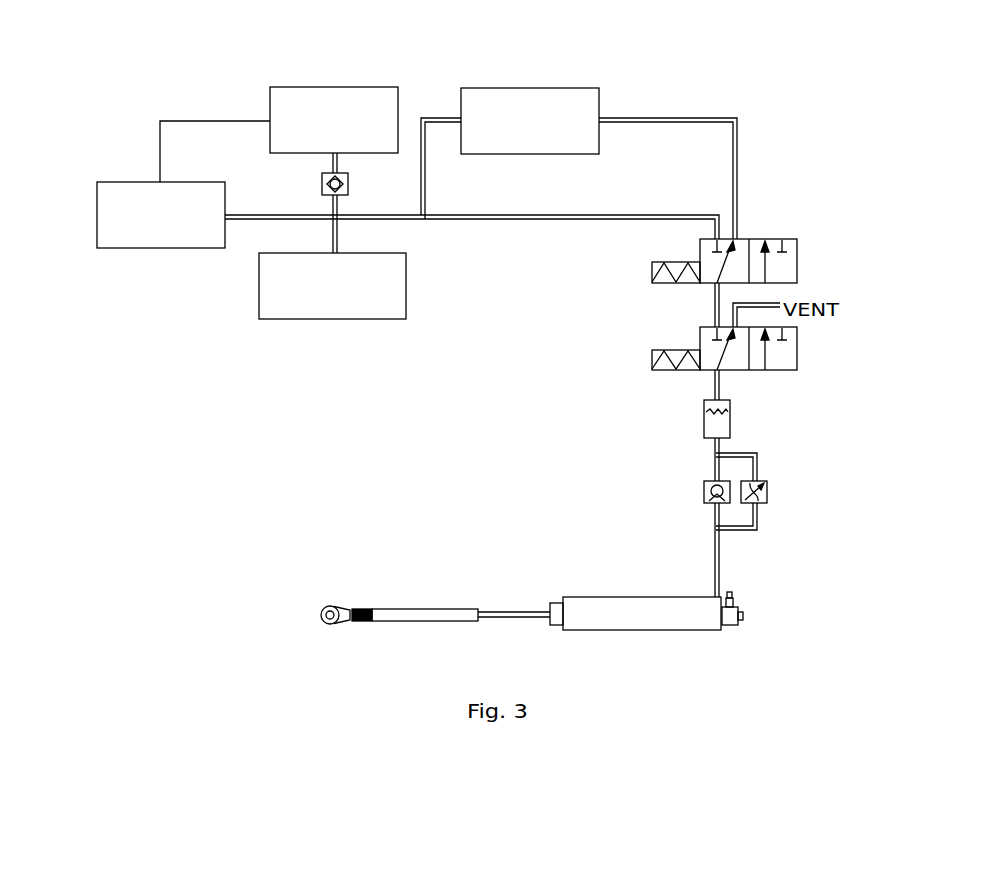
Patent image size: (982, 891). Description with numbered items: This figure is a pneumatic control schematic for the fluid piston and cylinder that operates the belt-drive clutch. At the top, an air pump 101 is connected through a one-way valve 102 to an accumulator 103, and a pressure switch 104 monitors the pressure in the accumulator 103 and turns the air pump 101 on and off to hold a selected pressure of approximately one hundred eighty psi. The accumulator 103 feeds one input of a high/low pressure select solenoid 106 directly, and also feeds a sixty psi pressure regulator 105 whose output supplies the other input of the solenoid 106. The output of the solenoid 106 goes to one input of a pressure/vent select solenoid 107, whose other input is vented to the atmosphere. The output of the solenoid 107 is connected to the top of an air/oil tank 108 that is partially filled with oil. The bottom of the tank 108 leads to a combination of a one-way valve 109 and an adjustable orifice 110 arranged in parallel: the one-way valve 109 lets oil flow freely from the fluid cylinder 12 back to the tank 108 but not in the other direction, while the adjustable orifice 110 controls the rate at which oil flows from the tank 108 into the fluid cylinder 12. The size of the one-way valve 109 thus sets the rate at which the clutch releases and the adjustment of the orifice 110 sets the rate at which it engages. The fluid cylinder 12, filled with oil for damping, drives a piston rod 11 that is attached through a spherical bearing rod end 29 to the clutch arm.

The air pump 101 is at (268, 100).
The one-way valve 102 is at (322, 181).
The accumulator 103 is at (290, 320).
The pressure switch 104 is at (97, 195).
The pressure regulator 105 is at (497, 88).
The high/low pressure select solenoid 106 is at (797, 258).
The pressure/vent select solenoid 107 is at (797, 348).
The air/oil tank 108 is at (730, 415).
The one-way valve 109 is at (704, 492).
The adjustable orifice 110 is at (767, 492).
The piston rod 11 is at (405, 612).
The fluid cylinder 12 is at (582, 608).
The spherical bearing rod end 29 is at (321, 612).